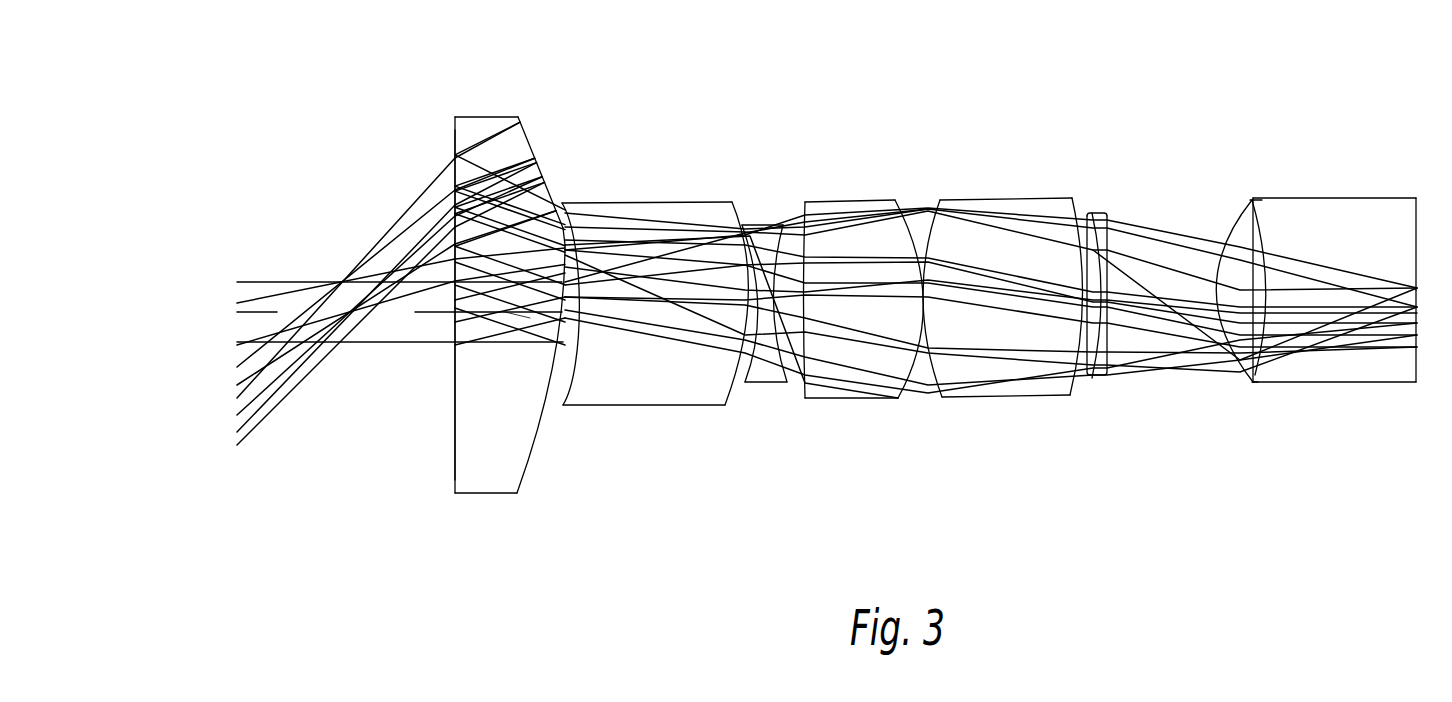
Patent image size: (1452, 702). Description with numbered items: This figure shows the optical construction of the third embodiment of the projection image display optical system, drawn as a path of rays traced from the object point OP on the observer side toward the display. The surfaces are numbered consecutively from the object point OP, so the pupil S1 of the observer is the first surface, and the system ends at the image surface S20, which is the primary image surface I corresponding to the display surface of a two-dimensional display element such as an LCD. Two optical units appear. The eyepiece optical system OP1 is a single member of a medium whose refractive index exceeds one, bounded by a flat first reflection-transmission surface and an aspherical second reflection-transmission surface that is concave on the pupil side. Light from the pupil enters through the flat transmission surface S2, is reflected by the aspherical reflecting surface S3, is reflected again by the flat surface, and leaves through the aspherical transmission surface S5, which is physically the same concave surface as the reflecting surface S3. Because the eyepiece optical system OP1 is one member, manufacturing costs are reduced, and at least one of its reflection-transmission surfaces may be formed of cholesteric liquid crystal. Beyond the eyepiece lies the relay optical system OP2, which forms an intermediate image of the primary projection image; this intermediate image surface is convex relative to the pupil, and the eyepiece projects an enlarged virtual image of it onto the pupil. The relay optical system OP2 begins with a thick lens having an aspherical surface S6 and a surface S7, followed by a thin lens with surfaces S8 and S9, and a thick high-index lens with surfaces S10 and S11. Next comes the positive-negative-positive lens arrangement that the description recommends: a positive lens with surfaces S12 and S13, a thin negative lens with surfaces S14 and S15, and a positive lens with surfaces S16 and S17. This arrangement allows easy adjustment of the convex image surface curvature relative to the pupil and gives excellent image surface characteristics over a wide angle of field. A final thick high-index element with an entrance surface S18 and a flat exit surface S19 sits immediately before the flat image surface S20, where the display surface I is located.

The object point OP is at (228, 330).
The pupil S1 is at (345, 279).
The eyepiece optical system OP1 is at (547, 512).
The first reflection-transmission surface S2 is at (455, 137).
The second reflection-transmission surface S3 is at (519, 115).
The second reflection-transmission surface S5 is at (541, 360).
The primary image surface I is at (522, 328).
The relay optical system OP2 is at (1428, 450).
The aspherical lens surface S6 is at (568, 230).
The lens surface S7 is at (736, 227).
The lens surface S8 is at (743, 226).
The lens surface S9 is at (781, 226).
The lens surface S10 is at (805, 222).
The lens surface S11 is at (900, 208).
The lens surface S12 is at (937, 207).
The lens surface S13 is at (1080, 210).
The lens surface S14 is at (1092, 378).
The lens surface S15 is at (1110, 340).
The lens surface S16 is at (1243, 217).
The lens surface S17 is at (1265, 215).
The lens surface S18 is at (1265, 237).
The lens surface S19 is at (1405, 225).
The image surface S20 is at (1416, 362).